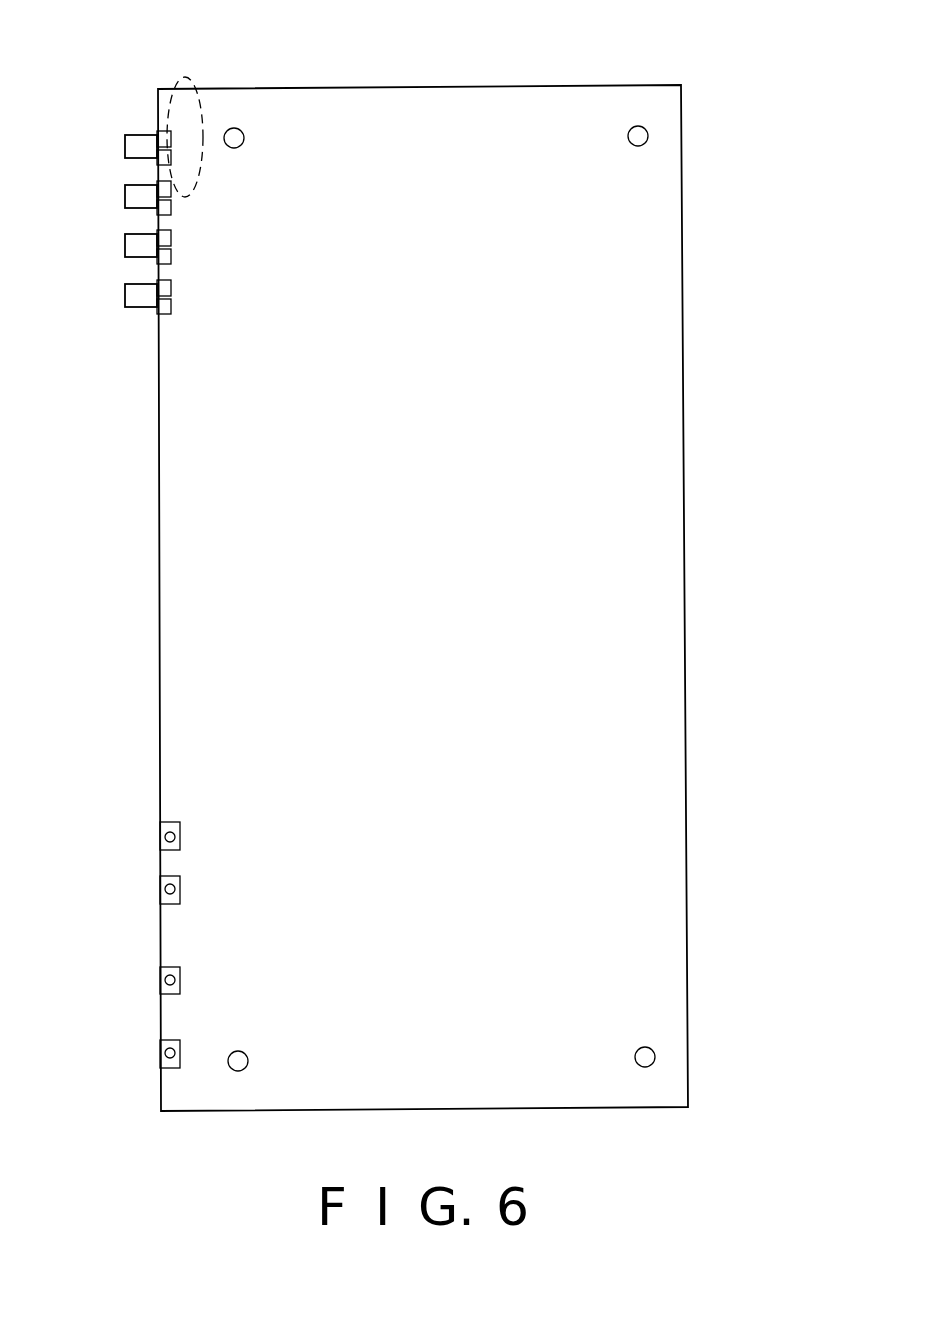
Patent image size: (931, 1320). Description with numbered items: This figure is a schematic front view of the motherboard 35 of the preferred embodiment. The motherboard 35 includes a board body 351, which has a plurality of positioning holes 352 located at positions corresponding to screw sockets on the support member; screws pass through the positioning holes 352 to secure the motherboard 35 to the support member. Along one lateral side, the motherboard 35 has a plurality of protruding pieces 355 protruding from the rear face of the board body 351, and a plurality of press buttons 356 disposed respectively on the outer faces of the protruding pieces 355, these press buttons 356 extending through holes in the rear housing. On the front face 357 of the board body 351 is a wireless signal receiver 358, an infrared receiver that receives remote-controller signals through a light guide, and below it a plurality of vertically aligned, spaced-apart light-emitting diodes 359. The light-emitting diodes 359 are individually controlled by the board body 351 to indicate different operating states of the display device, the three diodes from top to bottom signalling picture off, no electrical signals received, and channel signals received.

The motherboard 35 is at (588, 72).
The board body 351 is at (684, 358).
The positioning holes 352 is at (238, 1062).
The protruding pieces 355 is at (189, 86).
The press buttons 356 is at (135, 197).
The front face 357 is at (618, 982).
The wireless signal receiver 358 is at (173, 823).
The light-emitting diodes 359 is at (168, 1053).